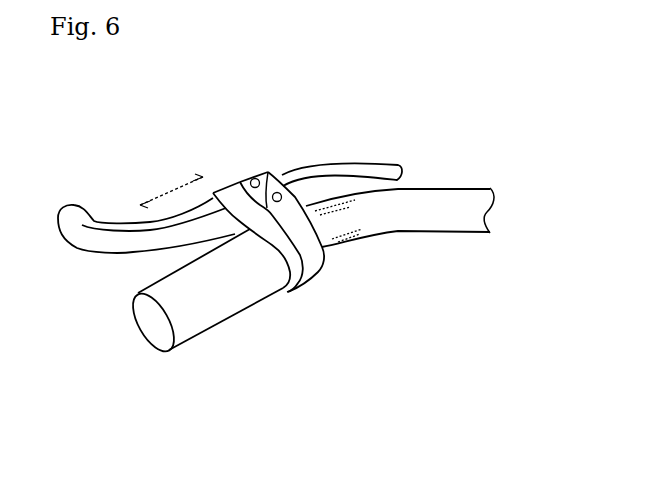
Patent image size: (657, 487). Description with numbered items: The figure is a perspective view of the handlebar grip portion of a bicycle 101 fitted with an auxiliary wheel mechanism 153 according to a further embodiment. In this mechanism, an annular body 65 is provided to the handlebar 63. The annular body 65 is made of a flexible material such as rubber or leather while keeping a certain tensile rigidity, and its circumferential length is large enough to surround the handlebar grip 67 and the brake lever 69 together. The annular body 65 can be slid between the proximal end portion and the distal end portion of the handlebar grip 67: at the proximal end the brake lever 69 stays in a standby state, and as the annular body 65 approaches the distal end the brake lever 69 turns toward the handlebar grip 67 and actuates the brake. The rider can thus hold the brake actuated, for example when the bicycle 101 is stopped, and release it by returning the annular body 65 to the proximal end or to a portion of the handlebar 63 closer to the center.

The handlebar 63 is at (429, 204).
The annular body 65 is at (232, 186).
The handlebar grip 67 is at (192, 326).
The brake lever 69 is at (110, 223).
The bicycle 101 is at (448, 236).
The auxiliary wheel mechanism 153 is at (290, 290).